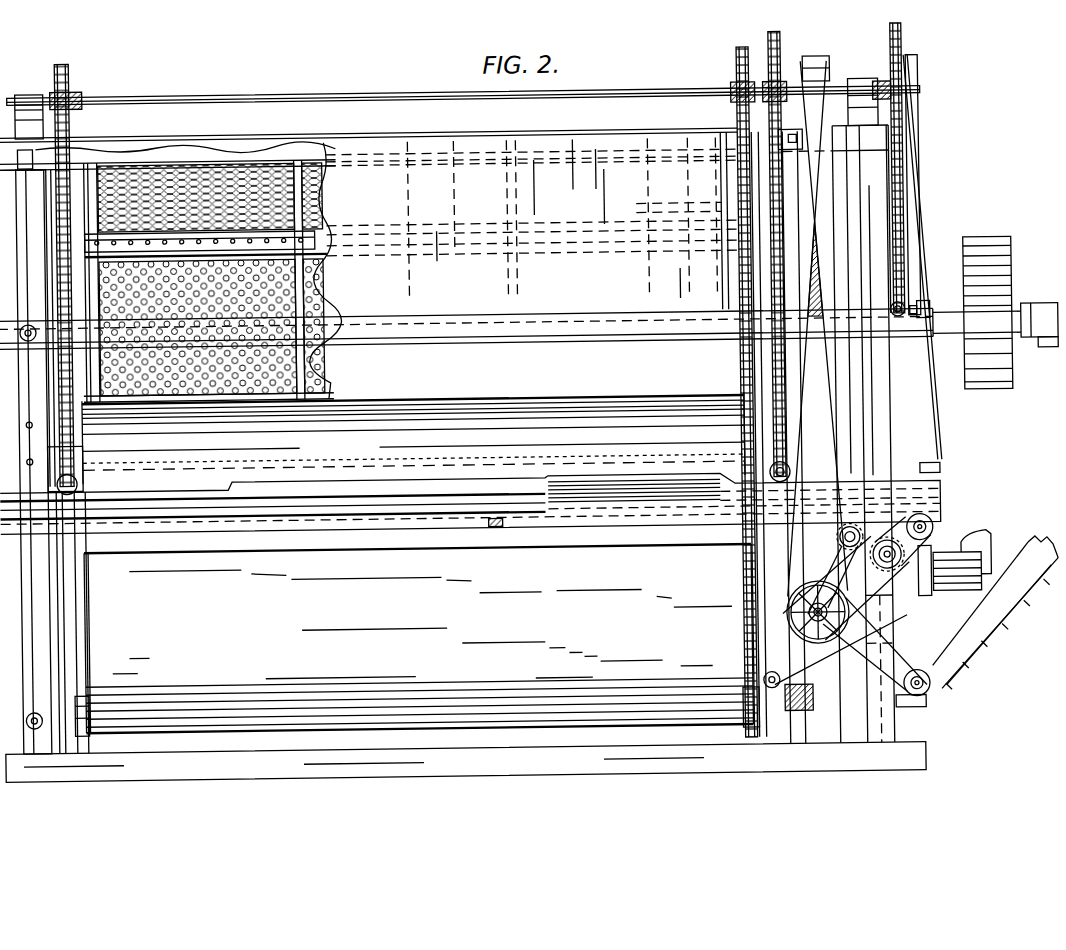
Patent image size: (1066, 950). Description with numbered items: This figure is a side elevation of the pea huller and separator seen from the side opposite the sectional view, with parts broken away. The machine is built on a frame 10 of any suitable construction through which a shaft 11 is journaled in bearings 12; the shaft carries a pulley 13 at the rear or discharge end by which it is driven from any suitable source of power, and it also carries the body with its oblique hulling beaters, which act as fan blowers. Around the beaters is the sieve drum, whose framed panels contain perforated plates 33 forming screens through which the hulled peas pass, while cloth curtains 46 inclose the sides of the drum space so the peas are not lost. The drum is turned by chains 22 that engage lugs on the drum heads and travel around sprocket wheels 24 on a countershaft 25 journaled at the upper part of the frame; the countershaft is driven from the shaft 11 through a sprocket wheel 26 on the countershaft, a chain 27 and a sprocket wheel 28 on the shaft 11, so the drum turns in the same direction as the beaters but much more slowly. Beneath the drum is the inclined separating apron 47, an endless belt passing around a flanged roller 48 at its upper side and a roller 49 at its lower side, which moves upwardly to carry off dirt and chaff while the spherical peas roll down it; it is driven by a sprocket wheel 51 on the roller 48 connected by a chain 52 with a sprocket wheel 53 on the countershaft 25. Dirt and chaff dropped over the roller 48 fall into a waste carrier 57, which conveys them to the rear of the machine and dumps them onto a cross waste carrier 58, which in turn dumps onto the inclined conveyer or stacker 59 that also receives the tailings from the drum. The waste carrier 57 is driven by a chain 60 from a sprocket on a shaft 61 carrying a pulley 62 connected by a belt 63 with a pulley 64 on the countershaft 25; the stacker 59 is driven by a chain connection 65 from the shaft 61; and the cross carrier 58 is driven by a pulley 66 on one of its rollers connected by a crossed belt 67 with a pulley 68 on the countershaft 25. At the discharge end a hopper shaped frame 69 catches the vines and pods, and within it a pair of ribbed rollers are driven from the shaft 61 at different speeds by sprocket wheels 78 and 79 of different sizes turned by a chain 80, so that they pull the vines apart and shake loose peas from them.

The frame 10 is at (556, 328).
The shaft 11 is at (926, 322).
The bearings 12 is at (1040, 308).
The pulley 13 is at (990, 243).
The chains 22 is at (83, 134).
The sprocket wheels 24 is at (76, 83).
The countershaft 25 is at (238, 92).
The sprocket wheel 26 is at (908, 48).
The chain 27 is at (906, 190).
The sprocket wheel 28 is at (906, 310).
The perforated plates 33 is at (334, 210).
The cloth curtains 46 is at (450, 150).
The separating apron 47 is at (387, 713).
The flanged roller 48 is at (730, 428).
The roller 49 is at (78, 730).
The sprocket wheel 51 is at (790, 470).
The chain 52 is at (745, 212).
The sprocket wheel 53 is at (787, 62).
The waste carrier 57 is at (308, 482).
The cross waste carrier 58 is at (975, 550).
The inclined conveyer or stacker 59 is at (992, 626).
The chain 60 is at (886, 604).
The shaft 61 is at (805, 641).
The pulley 62 is at (816, 632).
The belt 63 is at (826, 210).
The pulley 64 is at (830, 76).
The chain connection 65 is at (860, 668).
The pulley 66 is at (912, 674).
The crossed belt 67 is at (923, 223).
The pulley 68 is at (925, 73).
The hopper shaped frame 69 is at (935, 524).
The sprocket wheel 78 is at (833, 579).
The sprocket wheel 79 is at (900, 578).
The chain 80 is at (882, 595).